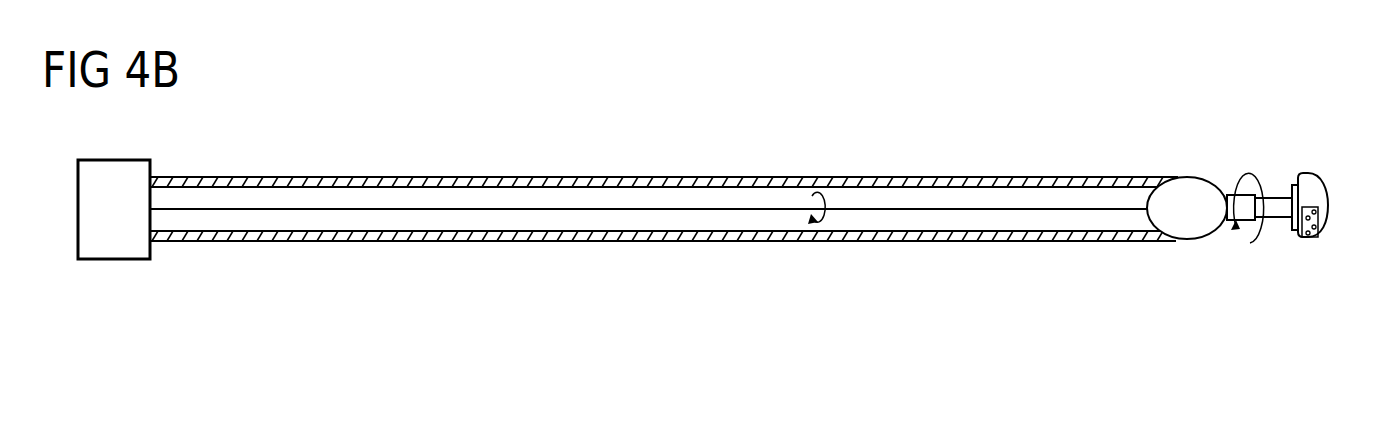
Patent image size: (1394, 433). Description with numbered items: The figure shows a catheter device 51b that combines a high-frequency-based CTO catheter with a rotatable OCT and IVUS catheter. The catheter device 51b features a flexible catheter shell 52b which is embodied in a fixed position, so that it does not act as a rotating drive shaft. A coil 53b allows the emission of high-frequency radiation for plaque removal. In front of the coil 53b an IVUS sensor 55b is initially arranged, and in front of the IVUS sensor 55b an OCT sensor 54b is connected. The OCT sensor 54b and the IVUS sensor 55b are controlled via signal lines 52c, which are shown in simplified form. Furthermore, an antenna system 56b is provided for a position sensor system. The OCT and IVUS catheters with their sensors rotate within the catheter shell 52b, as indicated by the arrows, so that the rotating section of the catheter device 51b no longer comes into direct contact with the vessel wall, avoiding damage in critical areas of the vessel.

The catheter device 51b is at (717, 188).
The catheter shell 52b is at (426, 177).
The signal lines 52c is at (890, 209).
The coil 53b is at (1198, 188).
The OCT sensor 54b is at (1277, 205).
The IVUS sensor 55b is at (1242, 207).
The antenna system 56b is at (1313, 238).